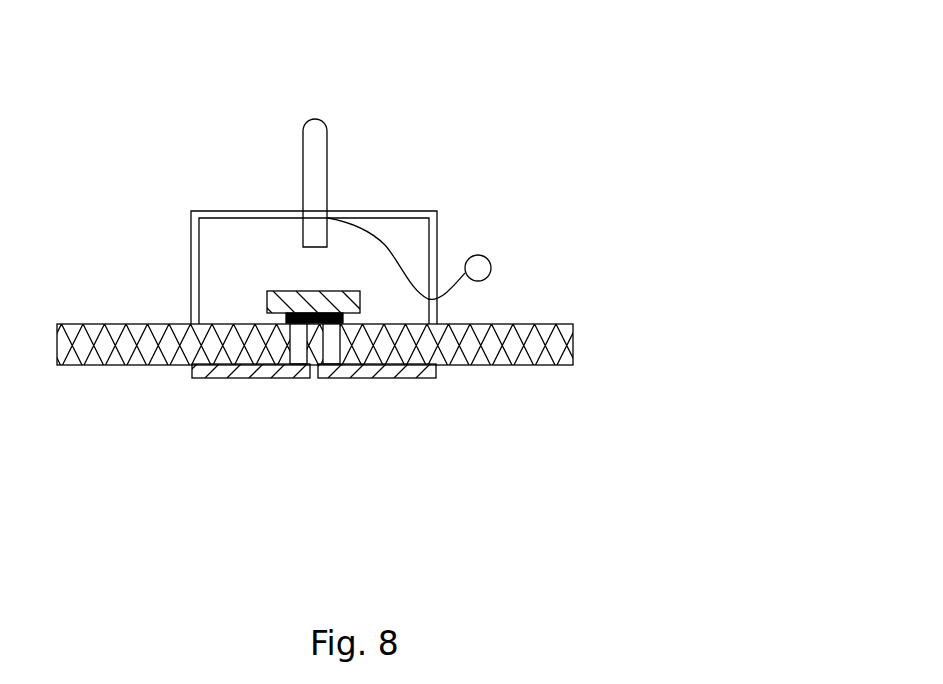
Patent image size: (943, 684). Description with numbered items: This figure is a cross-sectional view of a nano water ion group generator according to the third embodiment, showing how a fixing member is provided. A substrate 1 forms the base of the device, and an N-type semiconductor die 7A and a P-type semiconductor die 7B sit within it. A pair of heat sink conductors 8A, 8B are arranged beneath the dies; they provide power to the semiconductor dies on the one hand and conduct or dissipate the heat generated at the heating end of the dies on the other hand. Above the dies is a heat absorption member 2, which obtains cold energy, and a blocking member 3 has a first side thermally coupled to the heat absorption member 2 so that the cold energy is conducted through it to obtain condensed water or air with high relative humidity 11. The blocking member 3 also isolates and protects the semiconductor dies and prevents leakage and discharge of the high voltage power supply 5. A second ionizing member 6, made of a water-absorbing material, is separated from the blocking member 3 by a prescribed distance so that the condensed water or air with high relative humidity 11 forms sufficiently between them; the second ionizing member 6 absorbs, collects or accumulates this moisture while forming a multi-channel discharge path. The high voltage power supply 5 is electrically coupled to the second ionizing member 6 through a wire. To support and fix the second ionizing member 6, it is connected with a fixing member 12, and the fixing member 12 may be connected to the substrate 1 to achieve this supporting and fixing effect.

The substrate 1 is at (163, 365).
The heat absorption member 2 is at (267, 317).
The blocking member 3 is at (288, 290).
The high voltage power supply 5 is at (468, 279).
The second ionizing member 6 is at (317, 208).
The N-type semiconductor die 7A is at (300, 353).
The P-type semiconductor die 7B is at (332, 353).
The heat sink conductor 8A is at (307, 378).
The heat sink conductor 8B is at (328, 378).
The condensed water or air with high relative humidity 11 is at (288, 264).
The fixing member 12 is at (417, 210).